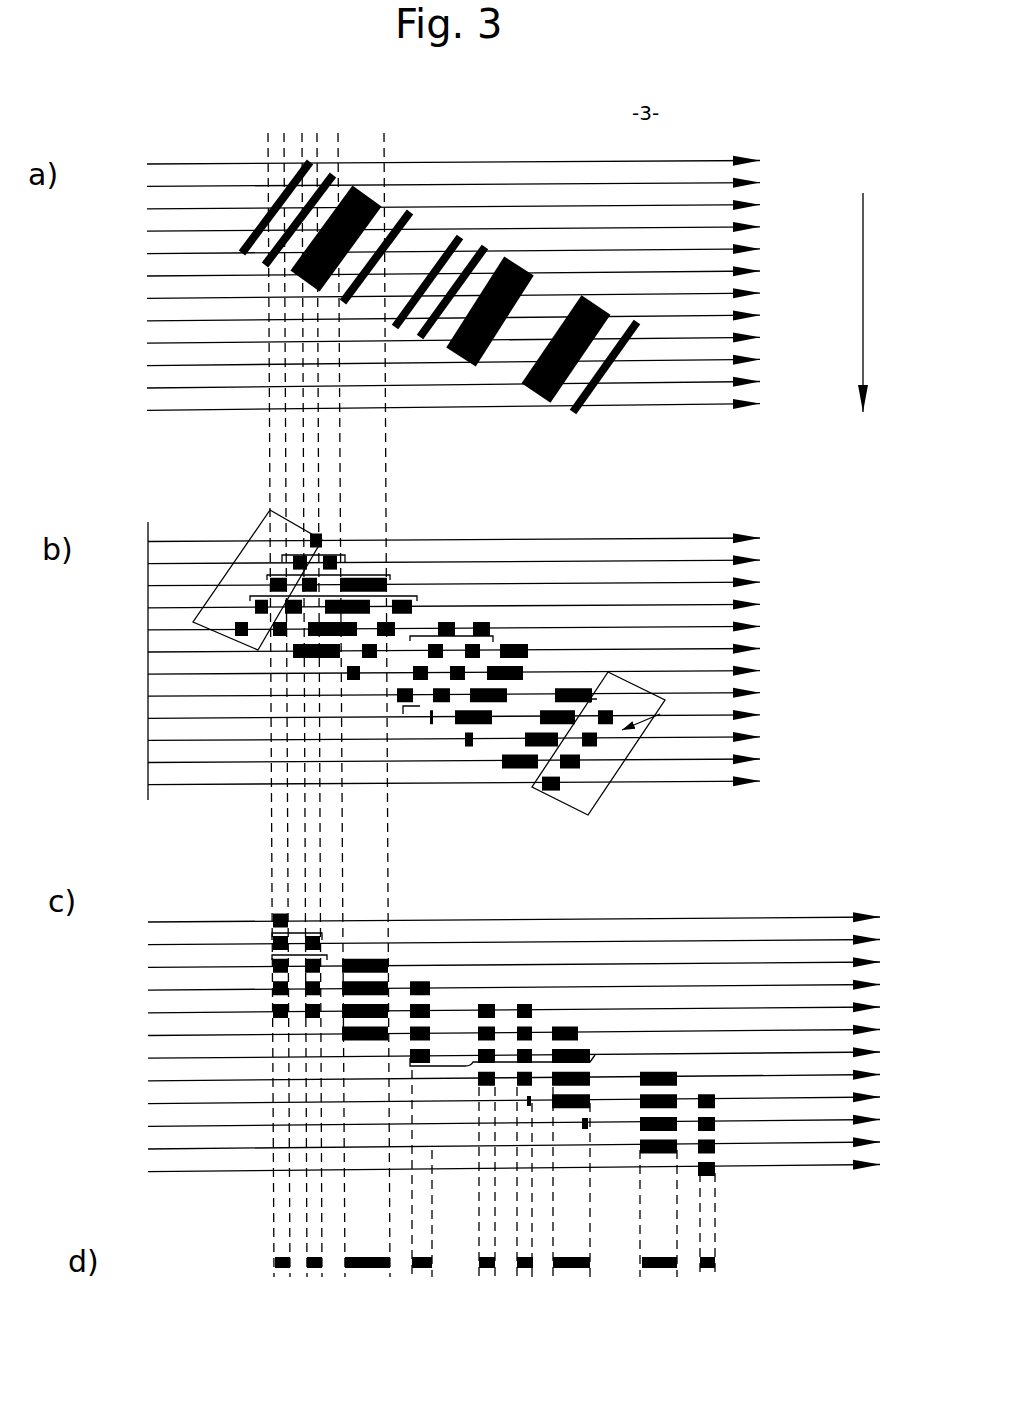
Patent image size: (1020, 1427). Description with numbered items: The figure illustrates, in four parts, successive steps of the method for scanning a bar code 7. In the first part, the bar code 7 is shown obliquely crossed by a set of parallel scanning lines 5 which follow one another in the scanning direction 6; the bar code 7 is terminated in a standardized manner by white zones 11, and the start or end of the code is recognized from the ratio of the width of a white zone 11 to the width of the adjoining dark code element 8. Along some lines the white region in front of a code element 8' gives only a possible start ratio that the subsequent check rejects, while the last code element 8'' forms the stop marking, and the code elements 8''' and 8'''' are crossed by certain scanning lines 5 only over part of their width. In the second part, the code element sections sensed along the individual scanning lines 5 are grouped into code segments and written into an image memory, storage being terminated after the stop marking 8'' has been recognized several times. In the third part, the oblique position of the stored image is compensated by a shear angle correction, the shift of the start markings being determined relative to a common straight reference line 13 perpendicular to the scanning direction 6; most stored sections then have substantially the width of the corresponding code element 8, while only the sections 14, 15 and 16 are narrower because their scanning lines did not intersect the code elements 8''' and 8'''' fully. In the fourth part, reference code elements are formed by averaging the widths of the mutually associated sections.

The scanning lines 5 is at (570, 160).
The scanning direction 6 is at (863, 198).
The bar code 7 is at (460, 226).
The code element 8 is at (337, 197).
The code element 8' is at (427, 341).
The last code element 8'' is at (666, 517).
The original code element 8''' is at (487, 355).
The original code element 8'''' is at (480, 224).
The white zone 11 is at (248, 178).
The reference line 13 is at (148, 530).
The code element section 14 is at (570, 1027).
The code element section 15 is at (587, 1123).
The code element section 16 is at (527, 1103).